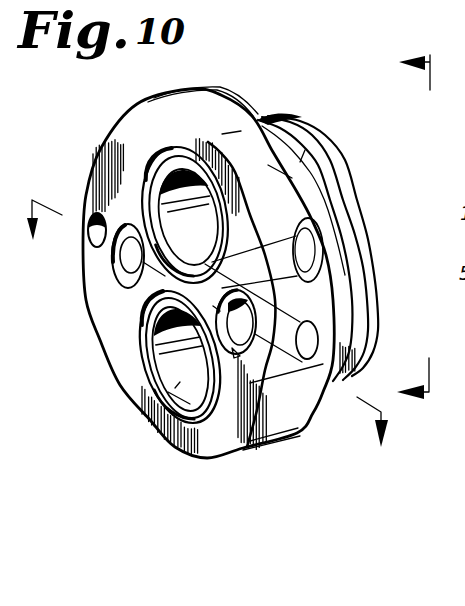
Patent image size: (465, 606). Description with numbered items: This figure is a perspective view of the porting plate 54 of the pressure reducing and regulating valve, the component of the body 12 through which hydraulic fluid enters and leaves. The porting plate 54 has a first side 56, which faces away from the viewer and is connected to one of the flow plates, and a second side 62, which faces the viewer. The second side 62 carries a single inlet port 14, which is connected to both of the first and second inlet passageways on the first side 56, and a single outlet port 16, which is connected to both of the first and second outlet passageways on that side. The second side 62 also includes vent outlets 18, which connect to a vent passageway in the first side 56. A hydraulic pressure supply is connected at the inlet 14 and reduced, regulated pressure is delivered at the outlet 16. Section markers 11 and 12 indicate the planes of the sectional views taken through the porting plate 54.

The section line 11- 11 is at (428, 221).
The body 12 is at (212, 311).
The fluid inlet 14 is at (151, 160).
The fluid outlet 16 is at (176, 384).
The vent outlets 18 is at (113, 234).
The porting plate 54 is at (203, 90).
The first side 56 is at (350, 180).
The second side 62 is at (108, 145).